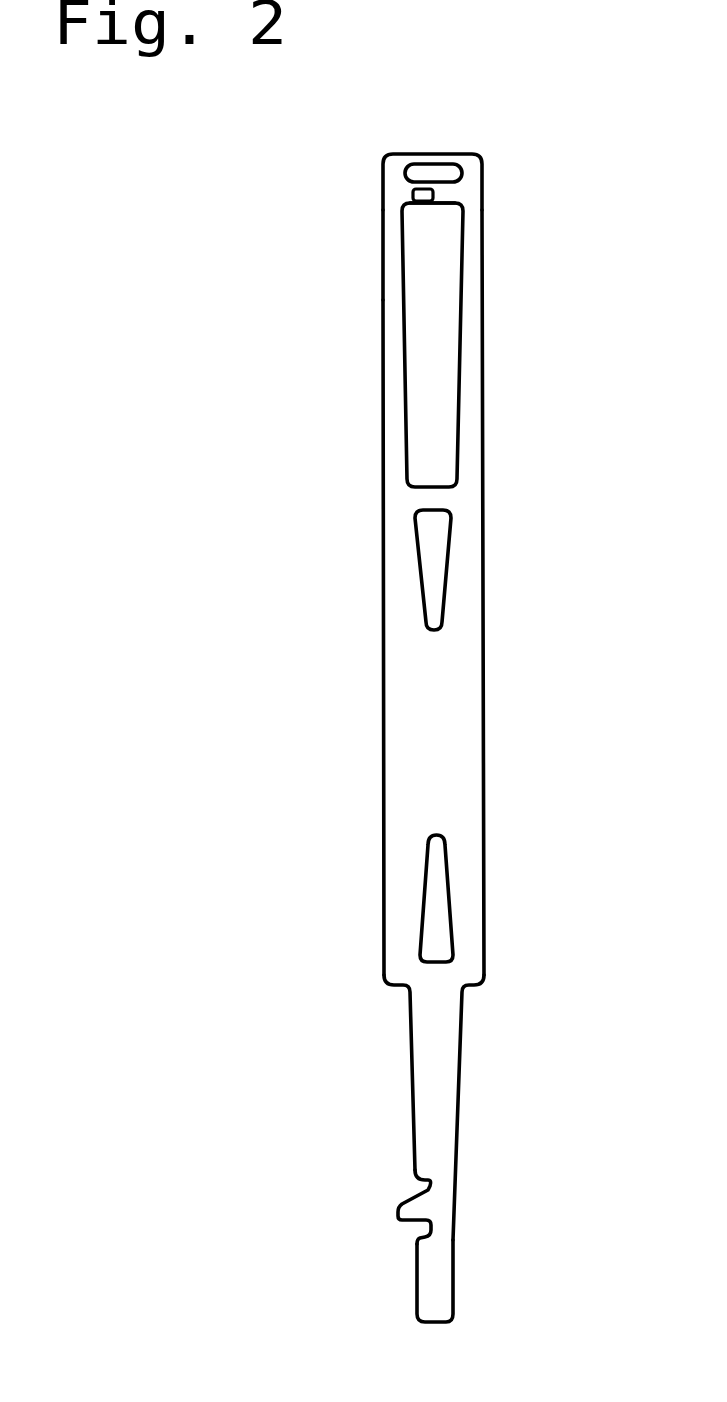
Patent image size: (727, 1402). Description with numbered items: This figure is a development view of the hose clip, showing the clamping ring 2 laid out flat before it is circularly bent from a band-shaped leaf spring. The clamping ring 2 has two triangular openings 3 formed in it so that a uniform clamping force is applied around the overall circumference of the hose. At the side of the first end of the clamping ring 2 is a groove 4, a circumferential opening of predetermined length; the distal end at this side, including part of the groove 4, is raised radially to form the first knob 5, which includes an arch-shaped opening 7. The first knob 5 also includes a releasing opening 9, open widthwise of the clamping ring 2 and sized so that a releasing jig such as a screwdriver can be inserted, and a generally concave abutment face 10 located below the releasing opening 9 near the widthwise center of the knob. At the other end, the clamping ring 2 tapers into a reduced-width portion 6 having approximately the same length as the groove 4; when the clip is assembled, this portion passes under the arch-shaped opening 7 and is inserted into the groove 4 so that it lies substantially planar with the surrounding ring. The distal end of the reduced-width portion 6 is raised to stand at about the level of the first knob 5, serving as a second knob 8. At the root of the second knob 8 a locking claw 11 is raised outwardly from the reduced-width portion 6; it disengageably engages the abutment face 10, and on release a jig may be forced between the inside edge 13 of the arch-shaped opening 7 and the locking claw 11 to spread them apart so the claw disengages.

The clamping ring 2 is at (467, 733).
The slot 3 is at (435, 577).
The groove 4 is at (435, 342).
The first knob 5 is at (483, 167).
The reduced-width portion 6 is at (452, 1088).
The arch-shaped opening 7 is at (435, 207).
The second knob 8 is at (447, 1303).
The releasing opening 9 is at (437, 173).
The abutment face 10 is at (414, 195).
The locking claw 11 is at (400, 1210).
The inside edge 13 is at (390, 245).